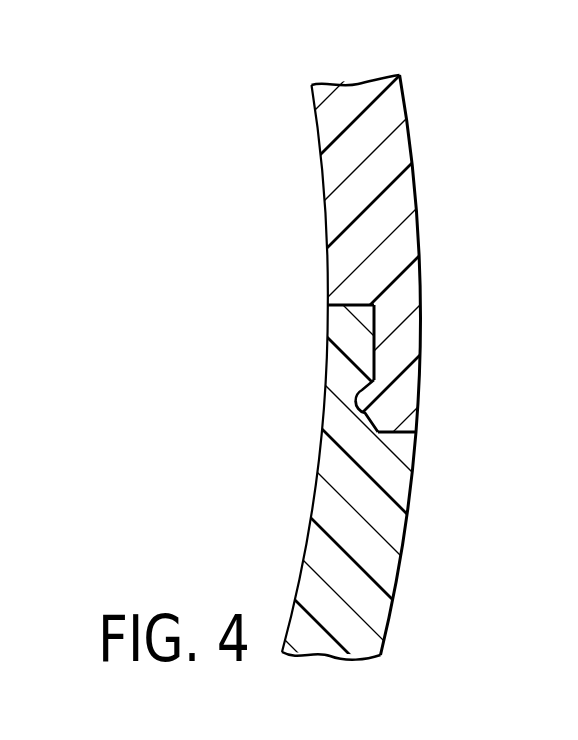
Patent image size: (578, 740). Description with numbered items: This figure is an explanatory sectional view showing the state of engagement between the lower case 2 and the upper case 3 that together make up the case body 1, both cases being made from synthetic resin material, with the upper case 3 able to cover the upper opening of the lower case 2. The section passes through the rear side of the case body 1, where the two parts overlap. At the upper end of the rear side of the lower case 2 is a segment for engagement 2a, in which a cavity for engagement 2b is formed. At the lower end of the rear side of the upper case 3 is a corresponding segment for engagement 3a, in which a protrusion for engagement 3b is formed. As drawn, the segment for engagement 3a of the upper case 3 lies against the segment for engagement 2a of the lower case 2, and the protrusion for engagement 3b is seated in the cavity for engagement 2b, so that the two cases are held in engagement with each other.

The case body 1 is at (415, 127).
The lower case 2 is at (407, 527).
The upper case 3 is at (364, 318).
The segment for engagement 2a is at (330, 324).
The segment for engagement 3a is at (410, 356).
The cavity for engagement 2b is at (354, 398).
The protrusion for engagement 3b is at (358, 411).